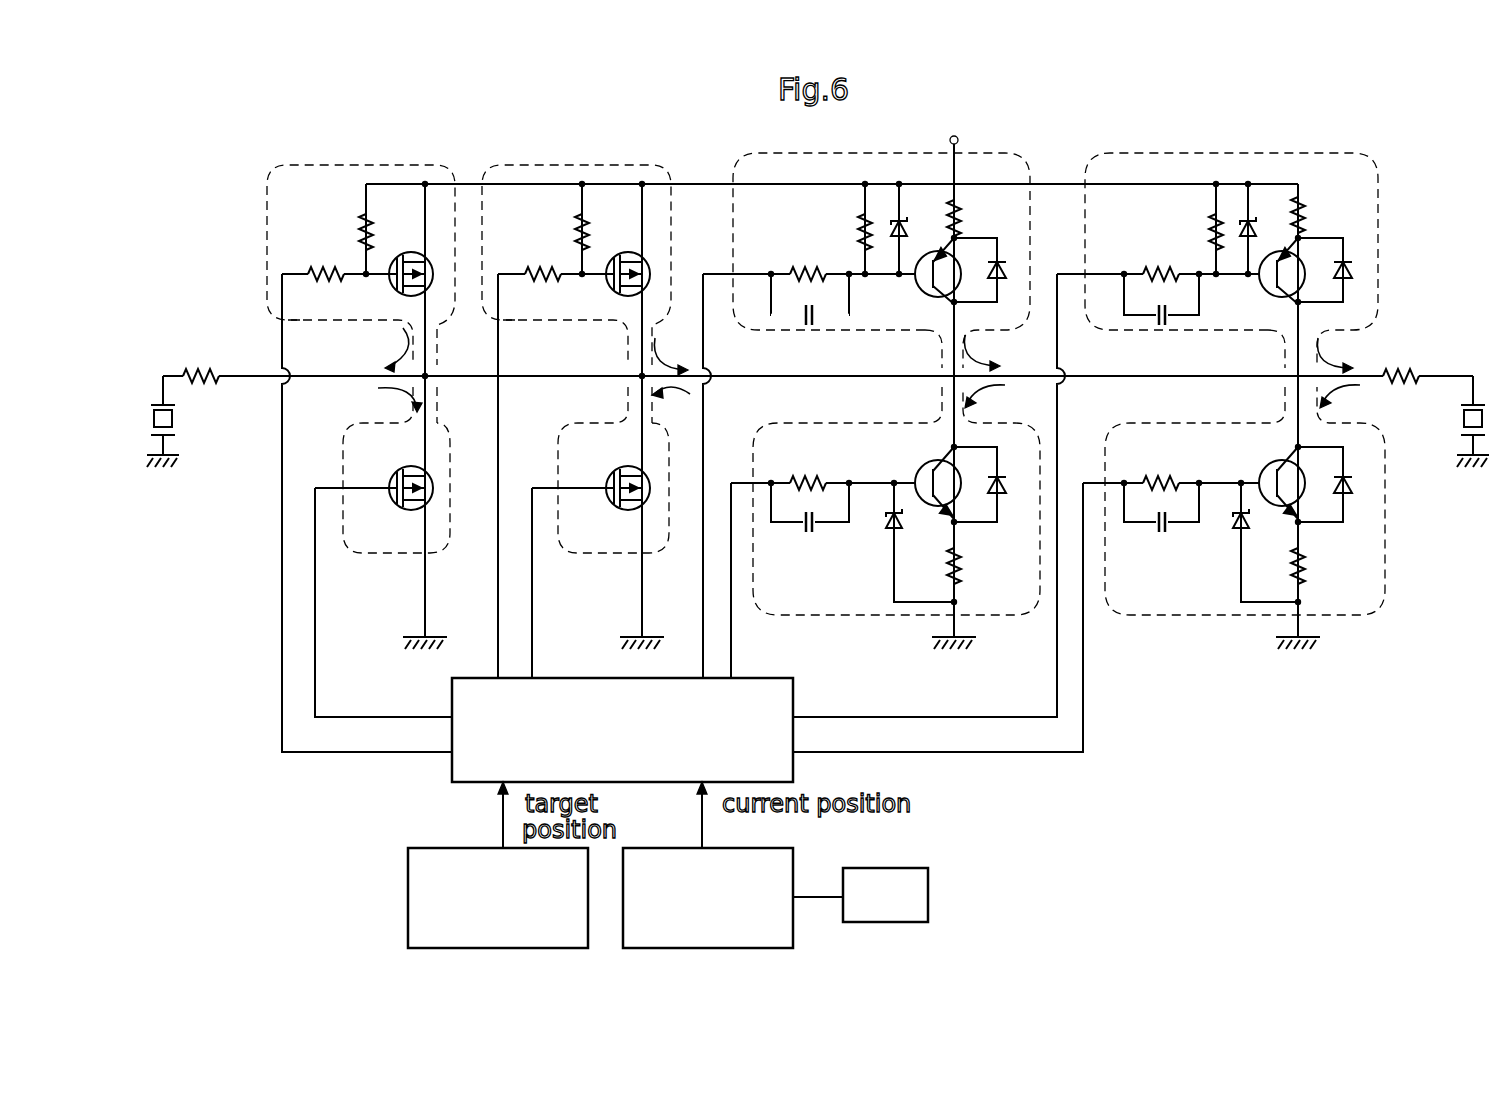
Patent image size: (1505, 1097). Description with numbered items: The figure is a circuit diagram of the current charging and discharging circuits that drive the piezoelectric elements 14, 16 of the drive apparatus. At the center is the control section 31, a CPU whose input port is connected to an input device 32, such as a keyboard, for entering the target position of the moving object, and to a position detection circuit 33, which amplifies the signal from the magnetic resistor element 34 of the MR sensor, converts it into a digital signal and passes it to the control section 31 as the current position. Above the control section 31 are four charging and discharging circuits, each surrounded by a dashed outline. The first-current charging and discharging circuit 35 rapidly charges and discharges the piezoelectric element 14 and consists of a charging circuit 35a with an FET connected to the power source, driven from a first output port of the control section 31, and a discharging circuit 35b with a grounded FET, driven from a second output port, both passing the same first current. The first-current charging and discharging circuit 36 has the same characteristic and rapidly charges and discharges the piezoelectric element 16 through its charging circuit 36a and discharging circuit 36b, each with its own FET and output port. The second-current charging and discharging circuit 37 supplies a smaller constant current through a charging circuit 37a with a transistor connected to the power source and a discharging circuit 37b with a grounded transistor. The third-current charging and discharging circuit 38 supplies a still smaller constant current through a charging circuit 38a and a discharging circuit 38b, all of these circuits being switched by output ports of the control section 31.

The piezoelectric element 14 is at (157, 372).
The piezoelectric element 16 is at (1478, 374).
The control section 31 is at (765, 678).
The input device 32 is at (408, 893).
The position detection circuit 33 is at (765, 948).
The magnetic resistor element 34 is at (900, 870).
The first-current charging and discharging circuit 35 is at (361, 434).
The charging circuit 35a is at (345, 300).
The discharging circuit 35b is at (352, 442).
The first-current charging and discharging circuit 36 is at (588, 397).
The charging circuit 36a is at (596, 465).
The discharging circuit 36b is at (575, 440).
The second-current charging and discharging circuit 37 is at (882, 393).
The charging circuit 37a is at (883, 310).
The discharging circuit 37b is at (843, 440).
The third-current charging and discharging circuit 38 is at (1095, 431).
The charging circuit 38a is at (1233, 310).
The discharging circuit 38b is at (1190, 440).